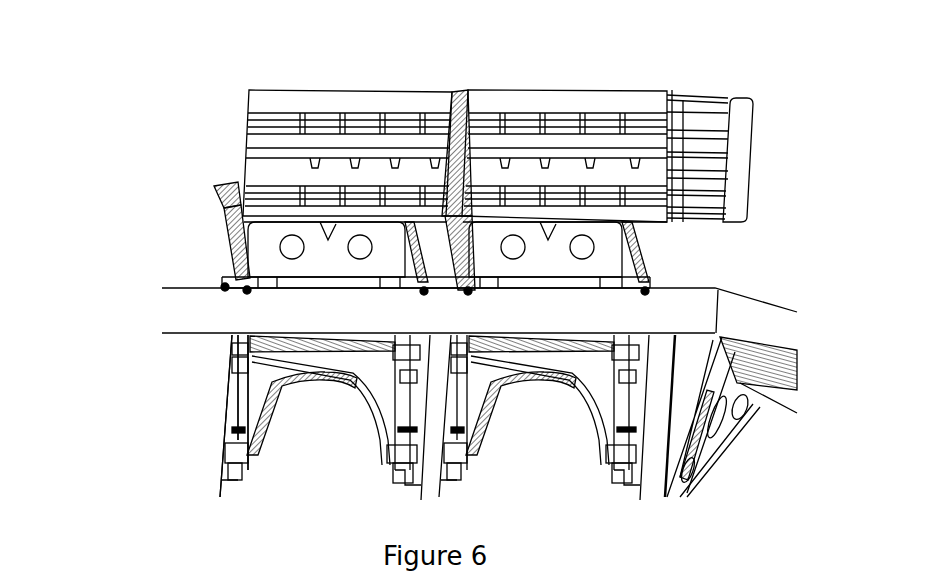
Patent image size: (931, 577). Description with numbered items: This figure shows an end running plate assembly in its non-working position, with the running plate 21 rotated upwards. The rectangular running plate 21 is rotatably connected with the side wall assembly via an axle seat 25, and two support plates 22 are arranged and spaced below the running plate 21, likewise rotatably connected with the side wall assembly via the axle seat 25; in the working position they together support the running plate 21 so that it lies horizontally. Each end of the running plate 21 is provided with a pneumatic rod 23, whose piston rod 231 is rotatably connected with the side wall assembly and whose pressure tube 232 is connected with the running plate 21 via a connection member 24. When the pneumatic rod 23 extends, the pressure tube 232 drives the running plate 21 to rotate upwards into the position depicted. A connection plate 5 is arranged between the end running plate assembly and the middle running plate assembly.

The running plate 21 is at (402, 106).
The connection plate 5 is at (742, 200).
The support plate 22 is at (383, 390).
The pneumatic rod 23 is at (128, 238).
The piston rod 231 is at (240, 262).
The pressure tube 232 is at (222, 212).
The connection member 24 is at (228, 190).
The axle seat 25 is at (228, 445).